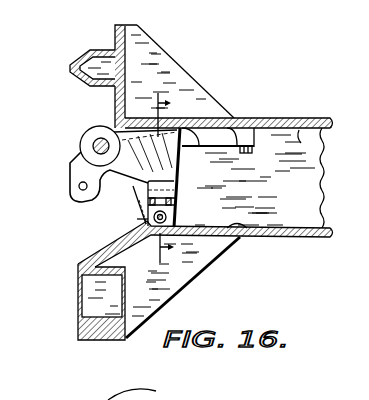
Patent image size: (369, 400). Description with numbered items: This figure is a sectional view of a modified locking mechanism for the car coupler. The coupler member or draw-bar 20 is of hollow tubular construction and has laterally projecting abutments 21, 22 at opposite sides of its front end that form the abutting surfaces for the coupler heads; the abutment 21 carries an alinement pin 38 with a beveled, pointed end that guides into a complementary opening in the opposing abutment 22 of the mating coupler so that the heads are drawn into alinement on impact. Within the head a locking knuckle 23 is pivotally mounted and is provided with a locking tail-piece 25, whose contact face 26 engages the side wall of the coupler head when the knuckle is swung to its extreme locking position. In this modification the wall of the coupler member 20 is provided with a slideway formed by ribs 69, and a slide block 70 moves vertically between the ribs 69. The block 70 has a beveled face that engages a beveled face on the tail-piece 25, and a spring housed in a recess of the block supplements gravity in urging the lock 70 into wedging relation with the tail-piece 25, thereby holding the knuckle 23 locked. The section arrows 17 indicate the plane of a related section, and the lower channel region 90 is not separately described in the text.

The alinement pin 38 is at (93, 50).
The laterally projecting abutment 21 is at (115, 101).
The locking tail-piece 25 is at (156, 148).
The draw-bar 20 is at (329, 92).
The section line 17 is at (157, 110).
The locking knuckle 23 is at (70, 167).
The rib 69 is at (137, 217).
The slide block 70 is at (174, 197).
The contact face 26 is at (253, 234).
The laterally projecting abutment 22 is at (100, 340).
The channel cavity 90 is at (100, 298).